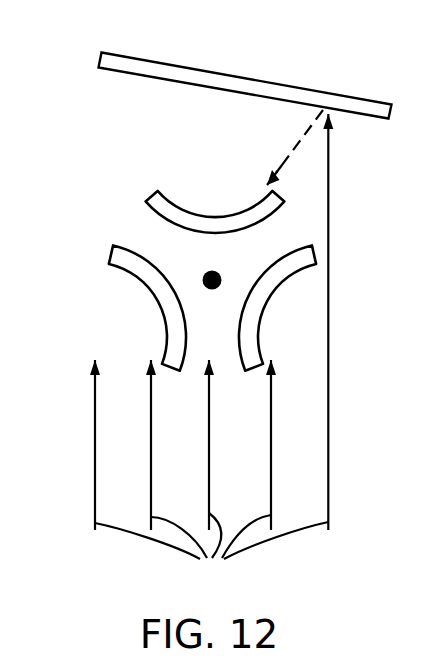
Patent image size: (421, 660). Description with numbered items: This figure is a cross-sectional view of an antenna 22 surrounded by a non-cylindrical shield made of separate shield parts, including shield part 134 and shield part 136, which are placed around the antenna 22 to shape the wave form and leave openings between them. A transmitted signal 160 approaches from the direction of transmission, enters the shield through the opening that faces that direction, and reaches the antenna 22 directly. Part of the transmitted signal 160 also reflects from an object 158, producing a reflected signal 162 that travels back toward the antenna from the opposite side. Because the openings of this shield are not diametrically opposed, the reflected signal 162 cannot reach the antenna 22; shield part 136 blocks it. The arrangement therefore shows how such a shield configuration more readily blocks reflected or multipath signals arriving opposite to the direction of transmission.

The object 158 is at (203, 69).
The reflected signal 162 is at (307, 135).
The shield part 136 is at (152, 193).
The antenna 22 is at (204, 277).
The shield part 134 is at (110, 255).
The transmitted signal 160 is at (211, 352).